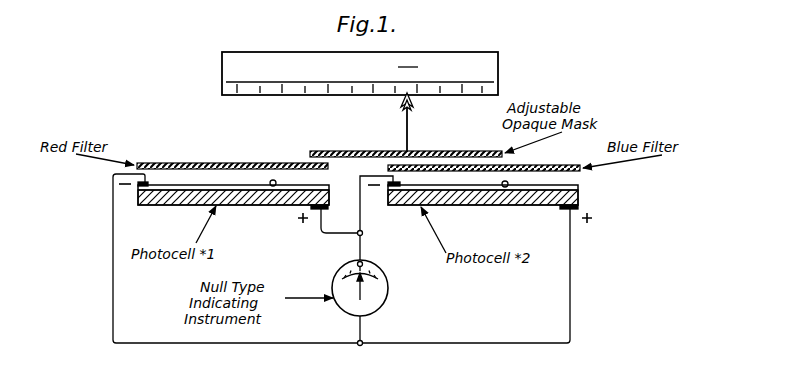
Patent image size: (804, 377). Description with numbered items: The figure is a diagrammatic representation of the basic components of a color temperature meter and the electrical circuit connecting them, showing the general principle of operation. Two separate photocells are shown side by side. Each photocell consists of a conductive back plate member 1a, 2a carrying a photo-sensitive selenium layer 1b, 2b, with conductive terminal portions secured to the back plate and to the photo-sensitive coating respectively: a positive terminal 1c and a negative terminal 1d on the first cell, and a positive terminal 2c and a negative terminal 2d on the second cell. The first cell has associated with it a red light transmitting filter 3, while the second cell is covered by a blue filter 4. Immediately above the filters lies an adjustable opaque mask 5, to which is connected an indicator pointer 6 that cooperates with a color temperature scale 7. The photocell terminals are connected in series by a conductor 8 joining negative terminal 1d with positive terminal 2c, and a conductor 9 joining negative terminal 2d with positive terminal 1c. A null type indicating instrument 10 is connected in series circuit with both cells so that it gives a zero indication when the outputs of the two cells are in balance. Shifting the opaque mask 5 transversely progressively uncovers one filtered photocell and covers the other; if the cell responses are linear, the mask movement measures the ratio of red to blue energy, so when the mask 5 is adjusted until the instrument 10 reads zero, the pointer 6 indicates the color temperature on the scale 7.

The conductive back plate member 1a is at (170, 200).
The photo-sensitive selenium layer 1b is at (271, 186).
The positive terminal portion 1c is at (326, 218).
The negative terminal portion 1d is at (150, 184).
The conductive back plate member 2a is at (546, 205).
The photo-sensitive selenium layer 2b is at (504, 187).
The positive terminal portion 2c is at (578, 209).
The negative terminal portion 2d is at (402, 184).
The red light transmitting filter 3 is at (226, 163).
The blue filter 4 is at (550, 165).
The adjustable opaque mask 5 is at (362, 151).
The indicator pointer 6 is at (409, 117).
The color temperature scale 7 is at (498, 54).
The conductor 8 is at (311, 344).
The conductor 9 is at (363, 222).
The null type indicating instrument 10 is at (390, 289).